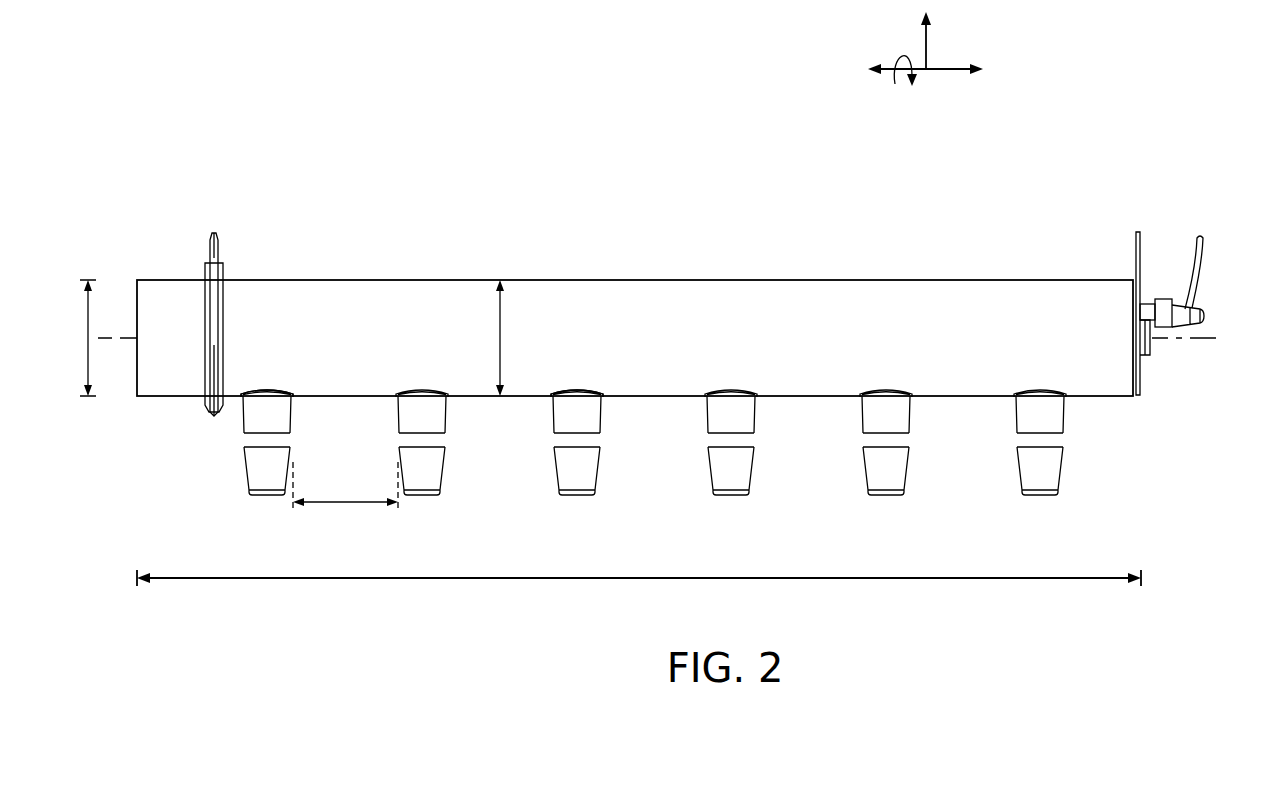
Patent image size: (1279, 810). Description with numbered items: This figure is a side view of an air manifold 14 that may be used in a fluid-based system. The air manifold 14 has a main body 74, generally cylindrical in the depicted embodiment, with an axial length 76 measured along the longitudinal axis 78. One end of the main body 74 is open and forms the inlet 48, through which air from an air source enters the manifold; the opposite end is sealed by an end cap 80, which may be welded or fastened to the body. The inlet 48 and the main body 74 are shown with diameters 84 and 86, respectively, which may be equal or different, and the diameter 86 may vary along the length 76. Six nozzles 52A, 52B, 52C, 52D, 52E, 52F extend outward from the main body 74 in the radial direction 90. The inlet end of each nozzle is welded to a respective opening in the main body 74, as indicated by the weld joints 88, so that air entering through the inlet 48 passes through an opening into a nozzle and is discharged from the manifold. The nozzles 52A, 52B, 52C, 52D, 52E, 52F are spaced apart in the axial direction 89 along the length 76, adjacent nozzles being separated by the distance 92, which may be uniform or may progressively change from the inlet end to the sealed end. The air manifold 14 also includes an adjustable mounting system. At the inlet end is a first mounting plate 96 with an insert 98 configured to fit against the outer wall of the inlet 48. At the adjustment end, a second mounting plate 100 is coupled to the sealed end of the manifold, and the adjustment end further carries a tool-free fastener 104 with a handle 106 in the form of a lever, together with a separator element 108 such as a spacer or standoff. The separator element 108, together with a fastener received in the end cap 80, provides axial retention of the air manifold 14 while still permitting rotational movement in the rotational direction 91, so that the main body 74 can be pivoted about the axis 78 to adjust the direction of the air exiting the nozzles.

The air manifold 14 is at (652, 230).
The inlet 48 is at (133, 296).
The nozzle 52A is at (246, 456).
The nozzle 52B is at (444, 456).
The nozzle 52C is at (598, 456).
The nozzle 52D is at (752, 456).
The nozzle 52E is at (905, 456).
The nozzle 52F is at (1060, 456).
The main body 74 is at (350, 280).
The axial length 76 is at (640, 578).
The longitudinal axis 78 is at (1186, 340).
The end cap 80 is at (1133, 405).
The inlet diameter 84 is at (88, 366).
The main body diameter 86 is at (500, 338).
The weld joint 88 is at (284, 392).
The axial direction 89 is at (947, 70).
The radial direction 90 is at (927, 46).
The rotational direction 91 is at (893, 84).
The distance 92 is at (345, 502).
The first mounting plate 96 is at (215, 232).
The insert 98 is at (223, 264).
The second mounting plate 100 is at (1136, 233).
The tool-free fastener 104 is at (1163, 298).
The handle 106 is at (1203, 258).
The separator element 108 is at (1150, 350).